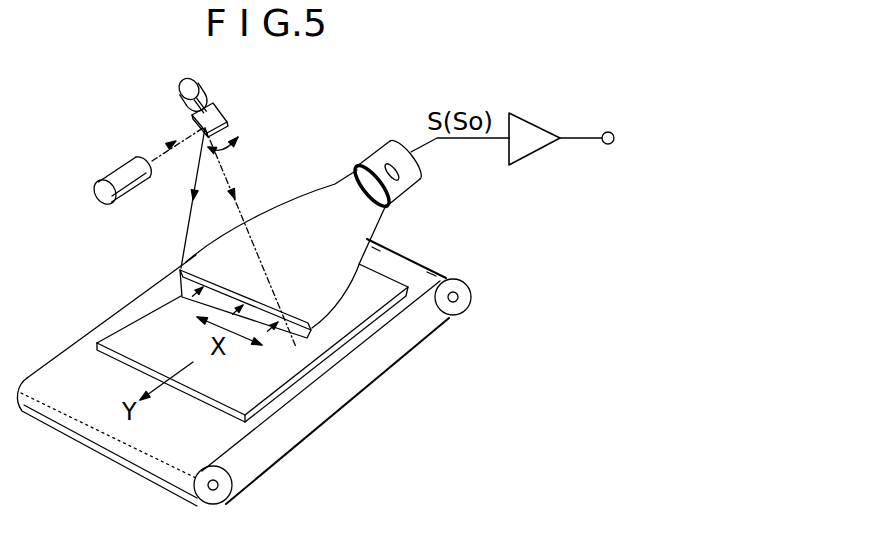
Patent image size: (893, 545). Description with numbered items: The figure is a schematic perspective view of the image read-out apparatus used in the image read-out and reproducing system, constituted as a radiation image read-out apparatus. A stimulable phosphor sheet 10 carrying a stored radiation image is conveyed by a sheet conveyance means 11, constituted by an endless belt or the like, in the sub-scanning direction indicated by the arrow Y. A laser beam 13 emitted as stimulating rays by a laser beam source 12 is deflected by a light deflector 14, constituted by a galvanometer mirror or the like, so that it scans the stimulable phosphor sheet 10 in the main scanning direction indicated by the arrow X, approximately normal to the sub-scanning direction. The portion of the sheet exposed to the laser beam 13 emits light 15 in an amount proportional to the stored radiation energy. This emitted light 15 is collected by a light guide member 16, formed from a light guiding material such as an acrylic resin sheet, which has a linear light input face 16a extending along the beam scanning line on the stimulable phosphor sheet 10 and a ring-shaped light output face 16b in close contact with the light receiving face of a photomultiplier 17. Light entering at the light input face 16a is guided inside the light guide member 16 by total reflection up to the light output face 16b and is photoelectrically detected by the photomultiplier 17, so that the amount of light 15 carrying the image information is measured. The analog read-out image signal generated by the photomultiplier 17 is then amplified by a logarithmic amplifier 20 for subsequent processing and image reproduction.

The stimulable phosphor sheet 10 is at (290, 380).
The sheet conveyance means 11 is at (238, 438).
The laser beam source 12 is at (122, 160).
The laser beam 13 is at (243, 206).
The light deflector 14 is at (222, 116).
The emitted light 15 is at (182, 297).
The light guide member 16 is at (306, 188).
The light input face 16a is at (303, 328).
The light output face 16b is at (412, 193).
The photomultiplier 17 is at (388, 140).
The logarithmic amplifier 20 is at (535, 122).